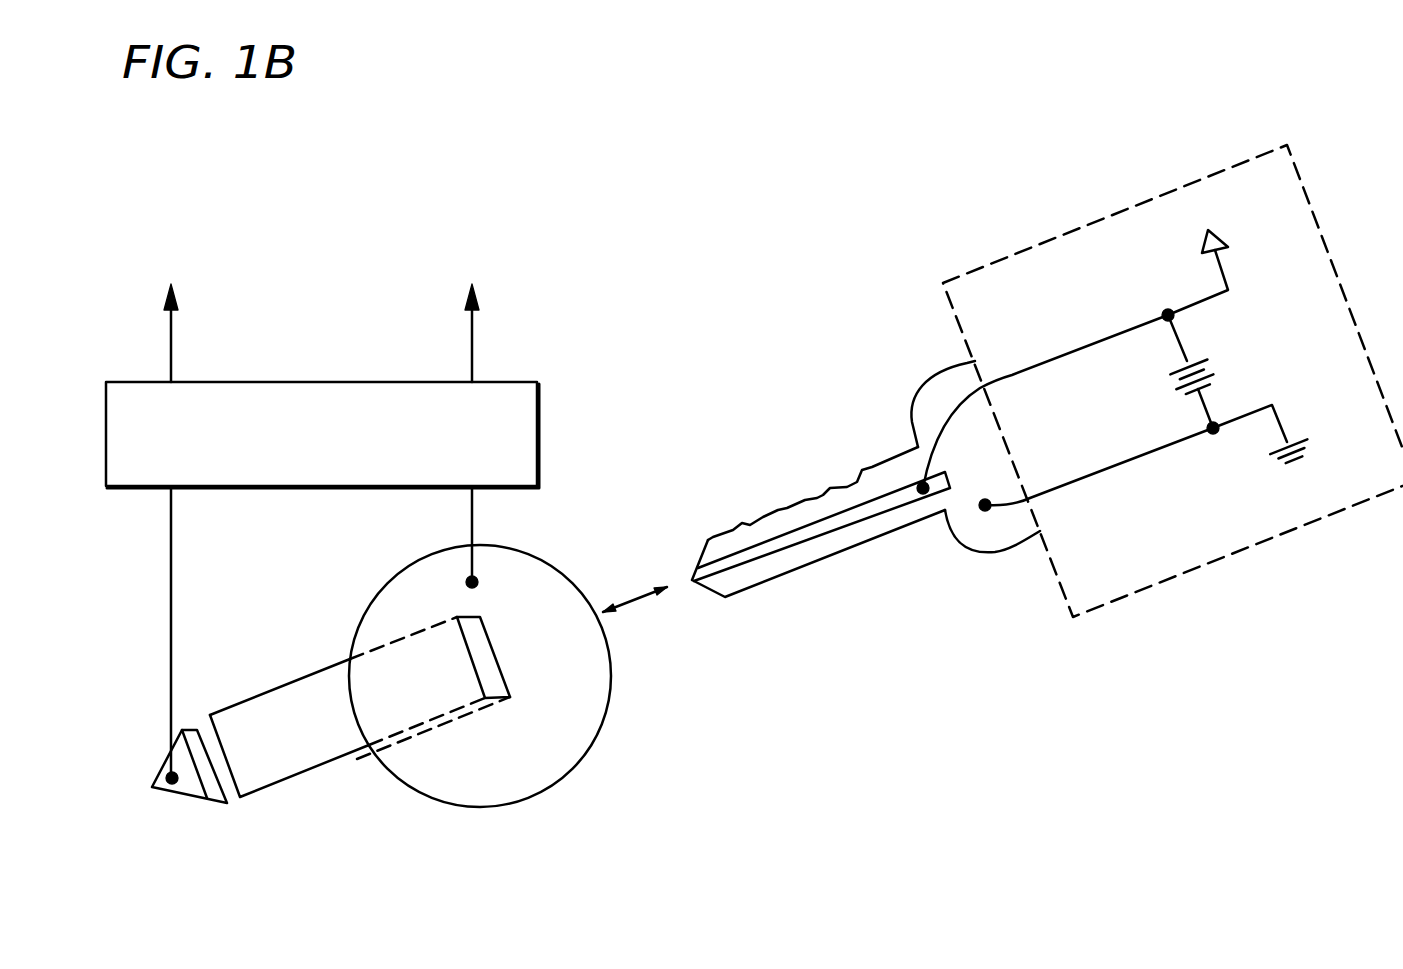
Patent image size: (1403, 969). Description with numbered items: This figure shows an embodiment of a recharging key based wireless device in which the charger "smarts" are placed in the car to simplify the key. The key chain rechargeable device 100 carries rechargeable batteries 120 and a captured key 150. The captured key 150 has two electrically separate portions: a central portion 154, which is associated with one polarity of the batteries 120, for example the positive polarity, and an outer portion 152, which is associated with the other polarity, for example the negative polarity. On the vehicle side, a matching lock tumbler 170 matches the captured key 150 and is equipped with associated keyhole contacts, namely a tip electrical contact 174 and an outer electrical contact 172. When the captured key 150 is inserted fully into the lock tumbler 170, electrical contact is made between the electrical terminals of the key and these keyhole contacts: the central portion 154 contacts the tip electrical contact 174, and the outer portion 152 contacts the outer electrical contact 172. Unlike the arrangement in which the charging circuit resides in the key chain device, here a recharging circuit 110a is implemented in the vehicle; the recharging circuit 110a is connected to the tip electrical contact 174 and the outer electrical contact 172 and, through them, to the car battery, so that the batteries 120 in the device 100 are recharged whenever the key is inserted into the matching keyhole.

The key chain rechargeable device 100 is at (1163, 394).
The recharging circuit 110a is at (537, 426).
The rechargeable batteries 120 is at (1217, 365).
The captured key 150 is at (866, 507).
The outer portion 152 is at (785, 563).
The central portion 154 is at (797, 538).
The lock tumbler 170 is at (577, 743).
The outer electrical contact 172 is at (313, 753).
The tip electrical contact 174 is at (187, 790).